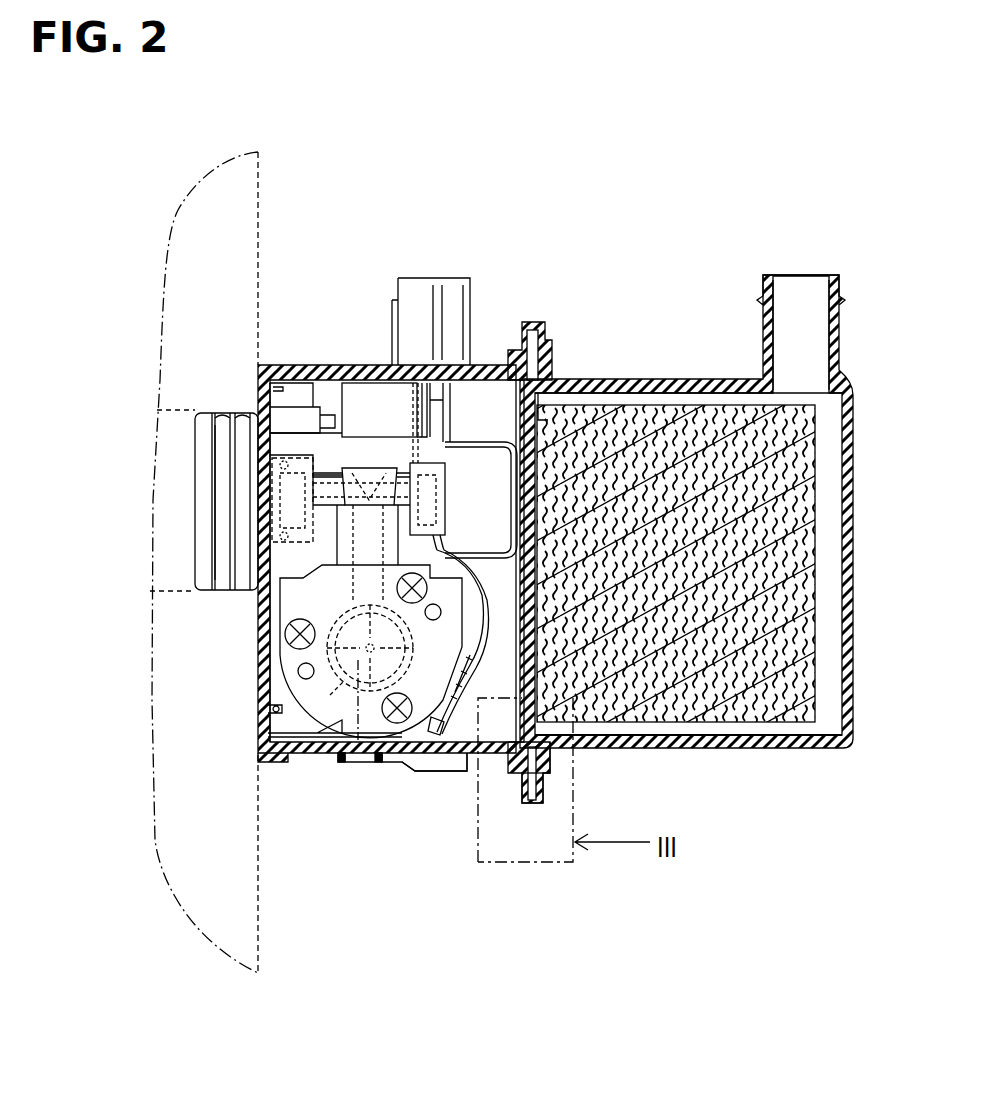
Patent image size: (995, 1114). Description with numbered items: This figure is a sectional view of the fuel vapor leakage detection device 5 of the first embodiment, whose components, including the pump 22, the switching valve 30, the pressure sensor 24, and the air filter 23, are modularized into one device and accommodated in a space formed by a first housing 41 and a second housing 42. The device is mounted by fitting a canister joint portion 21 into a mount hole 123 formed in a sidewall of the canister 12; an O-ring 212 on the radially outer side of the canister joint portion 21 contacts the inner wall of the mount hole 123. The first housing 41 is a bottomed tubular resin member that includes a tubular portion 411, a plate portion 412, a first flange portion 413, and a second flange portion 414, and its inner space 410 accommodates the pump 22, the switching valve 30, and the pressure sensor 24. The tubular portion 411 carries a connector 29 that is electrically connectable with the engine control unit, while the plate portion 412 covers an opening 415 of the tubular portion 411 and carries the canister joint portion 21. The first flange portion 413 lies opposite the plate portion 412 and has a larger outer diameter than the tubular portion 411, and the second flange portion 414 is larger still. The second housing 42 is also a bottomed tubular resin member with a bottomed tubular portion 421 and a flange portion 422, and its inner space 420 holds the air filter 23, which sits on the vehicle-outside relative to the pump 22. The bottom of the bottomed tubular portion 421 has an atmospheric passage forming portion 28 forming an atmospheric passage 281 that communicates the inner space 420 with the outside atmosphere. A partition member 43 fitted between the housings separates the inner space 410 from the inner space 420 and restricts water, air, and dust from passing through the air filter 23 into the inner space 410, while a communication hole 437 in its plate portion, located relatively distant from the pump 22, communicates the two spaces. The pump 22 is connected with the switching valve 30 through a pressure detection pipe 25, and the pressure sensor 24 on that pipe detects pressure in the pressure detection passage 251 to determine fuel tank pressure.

The canister 12 is at (192, 158).
The mount hole 123 is at (192, 591).
The canister joint portion 21 is at (240, 423).
The O-ring 212 is at (222, 422).
The pump 22 is at (382, 727).
The air filter 23 is at (773, 744).
The pressure sensor 24 is at (418, 463).
The pressure detection pipe 25 is at (318, 473).
The pressure detection passage 251 is at (348, 473).
The atmospheric passage forming portion 28 is at (767, 290).
The atmospheric passage 281 is at (790, 325).
The connector 29 is at (443, 278).
The switching valve 30 is at (492, 467).
The first housing 41 is at (433, 773).
The inner space 410 is at (450, 728).
The tubular portion 411 is at (340, 750).
The plate portion 412 is at (265, 765).
The first flange portion 413 is at (516, 798).
The second flange portion 414 is at (532, 803).
The opening 415 is at (268, 743).
The second housing 42 is at (720, 756).
The inner space 420 is at (823, 722).
The bottomed tubular portion 421 is at (642, 746).
The flange portion 422 is at (548, 800).
The partition member 43 is at (545, 338).
The communication hole 437 is at (548, 427).
The fuel vapor leakage detection device 5 is at (642, 243).